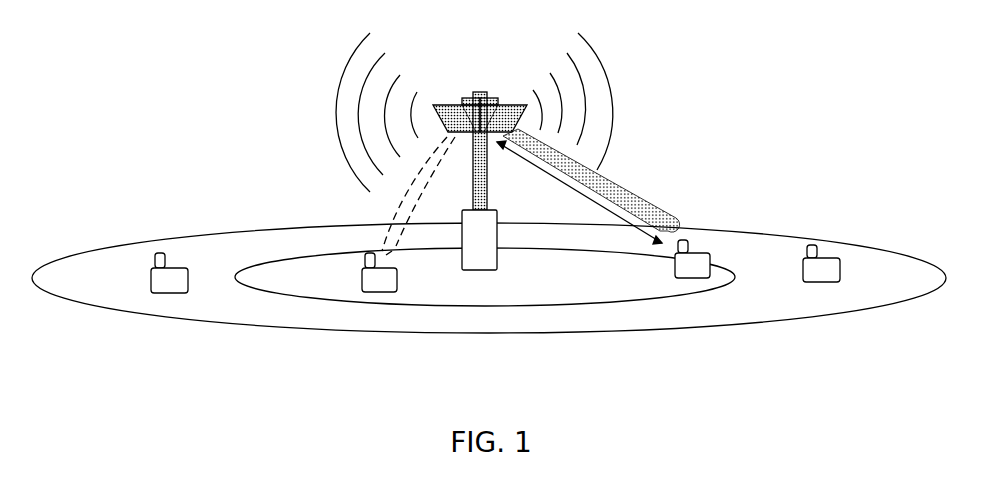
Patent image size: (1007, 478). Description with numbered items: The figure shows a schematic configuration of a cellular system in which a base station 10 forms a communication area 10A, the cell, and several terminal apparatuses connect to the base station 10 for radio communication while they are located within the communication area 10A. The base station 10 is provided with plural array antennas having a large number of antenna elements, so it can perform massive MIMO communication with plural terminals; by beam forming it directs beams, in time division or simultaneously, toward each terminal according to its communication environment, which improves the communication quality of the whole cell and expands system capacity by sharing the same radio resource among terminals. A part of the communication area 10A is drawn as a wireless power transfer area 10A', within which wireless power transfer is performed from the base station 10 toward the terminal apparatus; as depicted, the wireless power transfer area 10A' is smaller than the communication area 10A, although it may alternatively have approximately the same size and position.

The base station 10 is at (491, 138).
The communication area 10A is at (489, 308).
The wireless power transfer area 10A' is at (485, 315).